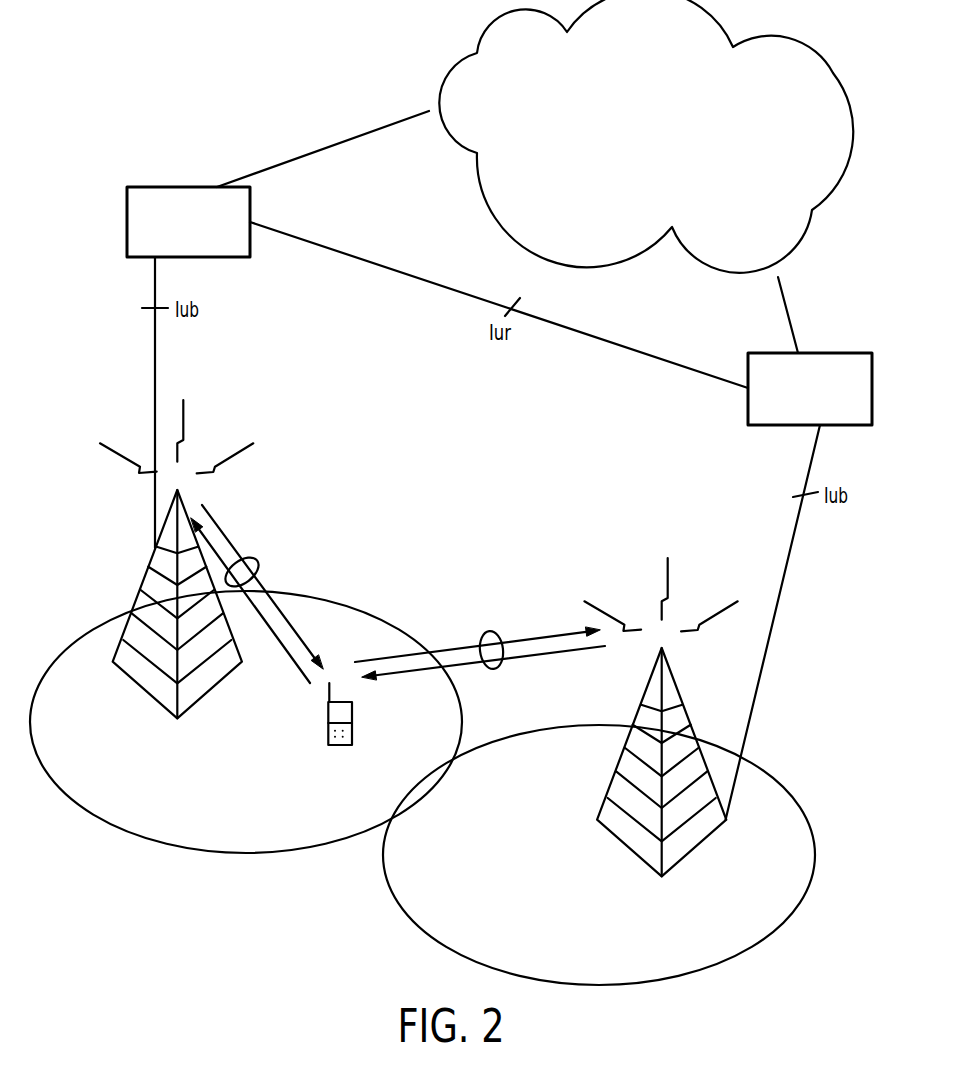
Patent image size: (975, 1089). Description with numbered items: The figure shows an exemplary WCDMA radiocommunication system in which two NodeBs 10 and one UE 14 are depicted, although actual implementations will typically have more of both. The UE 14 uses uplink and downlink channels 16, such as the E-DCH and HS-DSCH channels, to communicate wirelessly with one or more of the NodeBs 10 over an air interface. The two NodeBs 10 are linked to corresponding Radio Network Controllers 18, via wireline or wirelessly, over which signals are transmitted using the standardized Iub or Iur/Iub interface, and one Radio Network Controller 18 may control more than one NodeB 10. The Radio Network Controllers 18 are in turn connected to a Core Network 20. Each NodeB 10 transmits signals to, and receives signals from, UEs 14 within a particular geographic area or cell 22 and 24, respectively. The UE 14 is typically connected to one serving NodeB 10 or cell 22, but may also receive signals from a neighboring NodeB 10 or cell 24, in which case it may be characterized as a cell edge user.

The NodeB 10 is at (807, 727).
The UE 14 is at (328, 732).
The uplink and downlink channels 16 is at (253, 557).
The Radio Network Controller 18 is at (162, 187).
The Core Network 20 is at (832, 72).
The cell 22 is at (78, 805).
The cell 24 is at (762, 940).